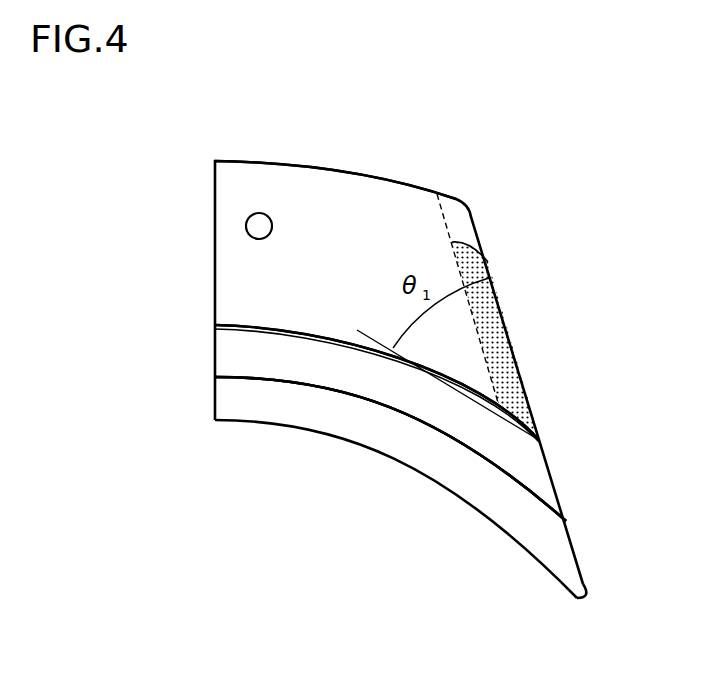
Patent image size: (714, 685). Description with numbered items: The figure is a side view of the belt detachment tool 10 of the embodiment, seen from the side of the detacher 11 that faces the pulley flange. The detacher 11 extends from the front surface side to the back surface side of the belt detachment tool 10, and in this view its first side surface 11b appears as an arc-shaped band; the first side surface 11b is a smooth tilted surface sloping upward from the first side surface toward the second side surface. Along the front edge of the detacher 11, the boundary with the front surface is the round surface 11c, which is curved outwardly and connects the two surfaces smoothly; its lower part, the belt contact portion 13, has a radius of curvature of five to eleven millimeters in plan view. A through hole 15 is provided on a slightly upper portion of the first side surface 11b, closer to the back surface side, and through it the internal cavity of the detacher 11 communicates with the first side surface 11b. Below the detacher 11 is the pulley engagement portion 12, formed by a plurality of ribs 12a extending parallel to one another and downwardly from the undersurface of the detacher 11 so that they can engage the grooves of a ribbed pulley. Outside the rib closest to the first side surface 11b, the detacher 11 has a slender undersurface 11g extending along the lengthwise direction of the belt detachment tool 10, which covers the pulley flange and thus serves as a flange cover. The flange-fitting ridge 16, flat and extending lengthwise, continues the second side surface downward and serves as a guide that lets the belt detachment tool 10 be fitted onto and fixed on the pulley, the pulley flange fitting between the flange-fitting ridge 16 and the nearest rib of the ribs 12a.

The belt detachment tool 10 is at (473, 126).
The detacher 11 is at (213, 268).
The first side surface 11b is at (293, 200).
The round surface 11c is at (465, 229).
The undersurface 11g is at (242, 328).
The pulley engagement portion 12 is at (362, 402).
The ribs 12a is at (253, 362).
The belt contact portion 13 is at (498, 342).
The through hole 15 is at (258, 226).
The flange-fitting ridge 16 is at (448, 468).